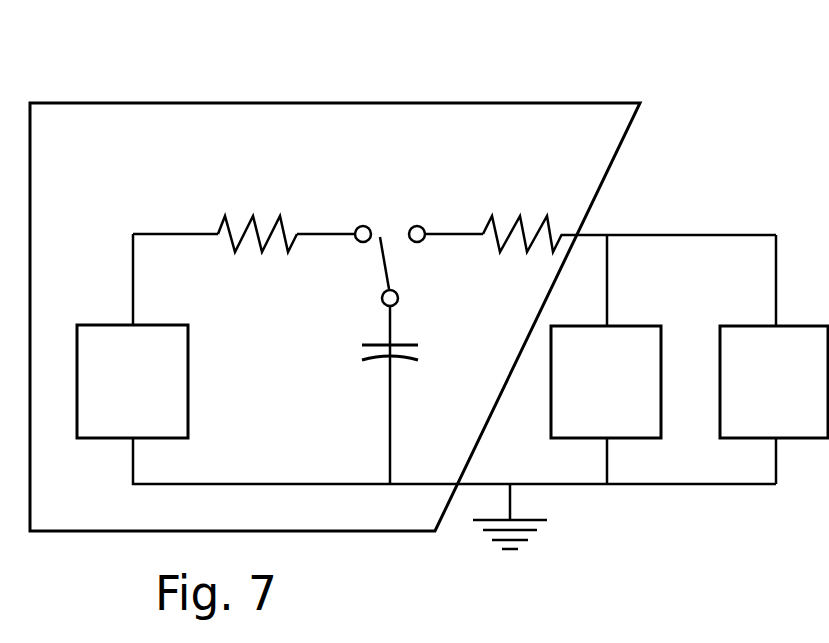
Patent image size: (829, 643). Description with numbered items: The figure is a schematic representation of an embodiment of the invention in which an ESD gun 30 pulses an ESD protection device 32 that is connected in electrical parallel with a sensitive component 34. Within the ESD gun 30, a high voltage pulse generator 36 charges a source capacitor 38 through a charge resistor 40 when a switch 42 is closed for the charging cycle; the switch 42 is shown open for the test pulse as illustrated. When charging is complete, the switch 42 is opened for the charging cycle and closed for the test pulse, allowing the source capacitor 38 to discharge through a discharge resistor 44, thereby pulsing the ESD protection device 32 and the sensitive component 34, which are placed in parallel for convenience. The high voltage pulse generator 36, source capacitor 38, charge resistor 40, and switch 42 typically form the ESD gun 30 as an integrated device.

The ESD gun 30 is at (525, 102).
The ESD protection device 32 is at (661, 414).
The sensitive component 34 is at (720, 345).
The high voltage pulse generator 36 is at (188, 383).
The source capacitor 38 is at (375, 343).
The charge resistor 40 is at (253, 218).
The switch 42 is at (393, 233).
The discharge resistor 44 is at (518, 218).